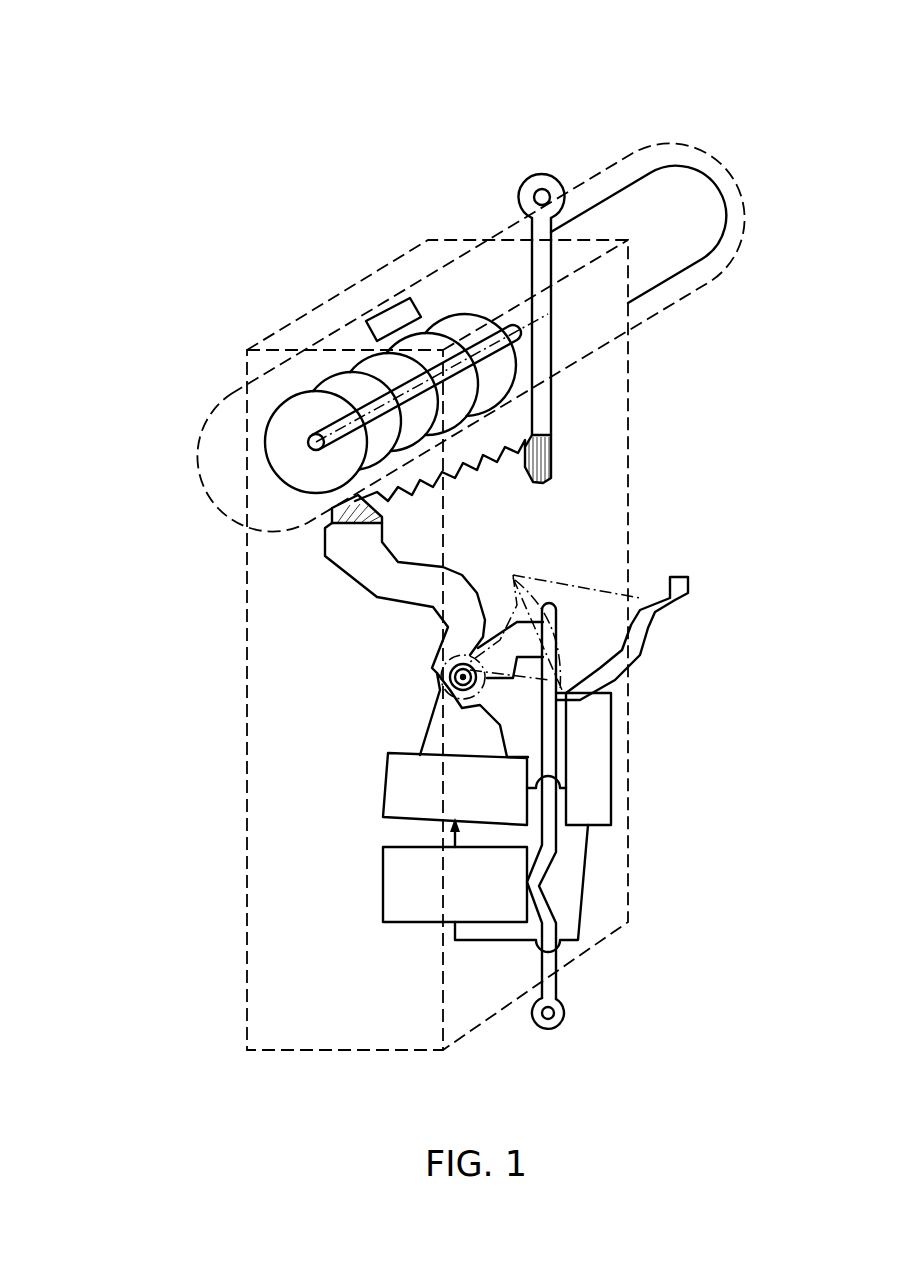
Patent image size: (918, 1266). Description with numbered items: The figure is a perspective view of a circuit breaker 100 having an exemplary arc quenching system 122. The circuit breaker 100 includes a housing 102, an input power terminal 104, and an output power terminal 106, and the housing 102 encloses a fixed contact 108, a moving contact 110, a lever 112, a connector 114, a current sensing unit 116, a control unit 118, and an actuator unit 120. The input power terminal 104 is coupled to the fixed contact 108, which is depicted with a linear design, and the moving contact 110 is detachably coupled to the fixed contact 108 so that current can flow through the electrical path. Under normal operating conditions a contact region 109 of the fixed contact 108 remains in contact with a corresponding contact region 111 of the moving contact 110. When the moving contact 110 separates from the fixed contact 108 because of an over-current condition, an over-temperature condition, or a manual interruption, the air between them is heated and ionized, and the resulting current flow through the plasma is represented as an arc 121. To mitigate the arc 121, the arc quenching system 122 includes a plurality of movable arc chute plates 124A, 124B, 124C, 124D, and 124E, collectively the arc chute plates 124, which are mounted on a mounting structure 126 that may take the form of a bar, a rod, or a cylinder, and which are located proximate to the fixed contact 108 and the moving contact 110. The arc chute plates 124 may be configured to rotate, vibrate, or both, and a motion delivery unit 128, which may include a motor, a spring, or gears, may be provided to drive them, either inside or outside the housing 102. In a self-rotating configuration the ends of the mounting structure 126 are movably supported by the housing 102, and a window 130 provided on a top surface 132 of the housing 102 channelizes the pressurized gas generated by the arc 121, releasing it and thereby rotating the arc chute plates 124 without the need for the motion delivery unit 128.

The circuit breaker 100 is at (151, 66).
The housing 102 is at (630, 405).
The input power terminal 104 is at (530, 183).
The output power terminal 106 is at (564, 1013).
The fixed contact 108 is at (553, 462).
The contact region 109 is at (540, 484).
The moving contact 110 is at (348, 577).
The contact region 111 is at (380, 510).
The lever 112 is at (690, 583).
The connector 114 is at (557, 838).
The current sensing unit 116 is at (383, 887).
The control unit 118 is at (612, 763).
The actuator unit 120 is at (385, 790).
The arc 121 is at (460, 470).
The arc quenching system 122 is at (205, 497).
The arc chute plates 124 is at (158, 358).
The arc chute plate 124A is at (285, 400).
The arc chute plate 124B is at (345, 373).
The arc chute plate 124C is at (380, 355).
The arc chute plate 124D is at (426, 332).
The arc chute plate 124E is at (466, 310).
The mounting structure 126 is at (540, 325).
The motion delivery unit 128 is at (718, 195).
The window 130 is at (368, 322).
The top surface 132 is at (512, 284).